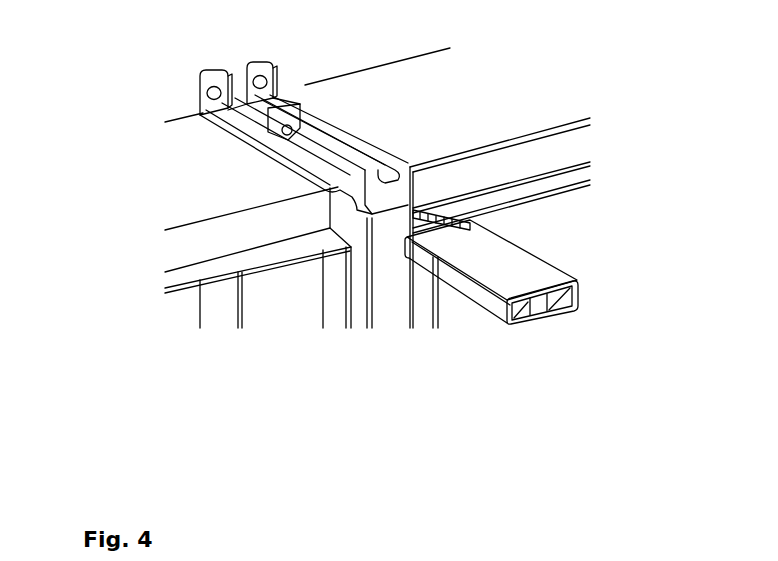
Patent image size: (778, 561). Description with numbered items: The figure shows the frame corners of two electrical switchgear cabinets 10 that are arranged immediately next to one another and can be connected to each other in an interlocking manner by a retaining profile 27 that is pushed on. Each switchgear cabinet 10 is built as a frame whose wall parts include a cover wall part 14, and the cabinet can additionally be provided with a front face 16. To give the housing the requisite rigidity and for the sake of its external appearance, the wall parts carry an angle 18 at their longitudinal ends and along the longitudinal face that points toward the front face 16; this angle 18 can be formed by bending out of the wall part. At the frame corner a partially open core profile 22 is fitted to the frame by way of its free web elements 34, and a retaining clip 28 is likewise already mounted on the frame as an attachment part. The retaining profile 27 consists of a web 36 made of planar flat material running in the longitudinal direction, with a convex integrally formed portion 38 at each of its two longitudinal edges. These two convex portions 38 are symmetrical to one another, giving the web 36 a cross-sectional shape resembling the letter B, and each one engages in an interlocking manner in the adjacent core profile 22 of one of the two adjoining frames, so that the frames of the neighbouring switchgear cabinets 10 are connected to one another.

The electrical switchgear cabinet 10 is at (388, 390).
The cover wall part 14 is at (201, 196).
The front face 16 is at (561, 233).
The angle 18 is at (230, 263).
The core profile 22 is at (297, 163).
The retaining profile 27 is at (524, 292).
The retaining clip 28 is at (222, 72).
The free web elements 34 is at (352, 152).
The web 36 is at (577, 285).
The convex integrally formed portion 38 is at (563, 305).